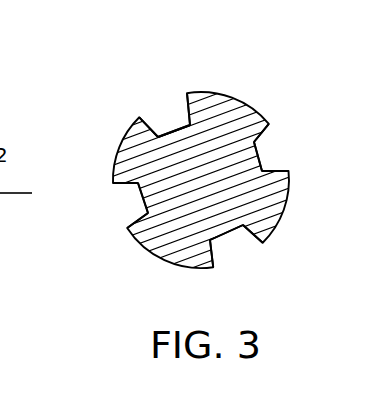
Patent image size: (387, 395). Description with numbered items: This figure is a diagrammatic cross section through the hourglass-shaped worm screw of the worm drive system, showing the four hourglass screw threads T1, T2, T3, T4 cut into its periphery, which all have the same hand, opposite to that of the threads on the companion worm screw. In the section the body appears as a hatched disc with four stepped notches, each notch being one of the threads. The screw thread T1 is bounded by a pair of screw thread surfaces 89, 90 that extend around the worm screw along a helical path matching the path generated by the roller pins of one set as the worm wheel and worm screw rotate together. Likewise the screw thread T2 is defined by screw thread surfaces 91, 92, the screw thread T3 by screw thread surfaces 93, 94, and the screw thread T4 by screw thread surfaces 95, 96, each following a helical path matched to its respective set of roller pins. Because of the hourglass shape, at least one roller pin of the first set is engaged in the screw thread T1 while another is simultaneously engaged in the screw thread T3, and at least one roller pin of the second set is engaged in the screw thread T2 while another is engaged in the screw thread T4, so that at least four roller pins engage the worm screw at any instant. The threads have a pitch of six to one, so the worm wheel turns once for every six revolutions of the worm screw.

The screw thread surface 89 is at (216, 263).
The screw thread surface 90 is at (261, 240).
The screw thread surface 91 is at (288, 169).
The screw thread surface 92 is at (271, 123).
The screw thread surface 93 is at (186, 96).
The screw thread surface 94 is at (140, 117).
The screw thread surface 95 is at (112, 186).
The screw thread surface 96 is at (128, 227).
The hourglass screw thread T1 is at (230, 239).
The hourglass screw thread T2 is at (258, 158).
The hourglass screw thread T3 is at (167, 134).
The hourglass screw thread T4 is at (134, 201).